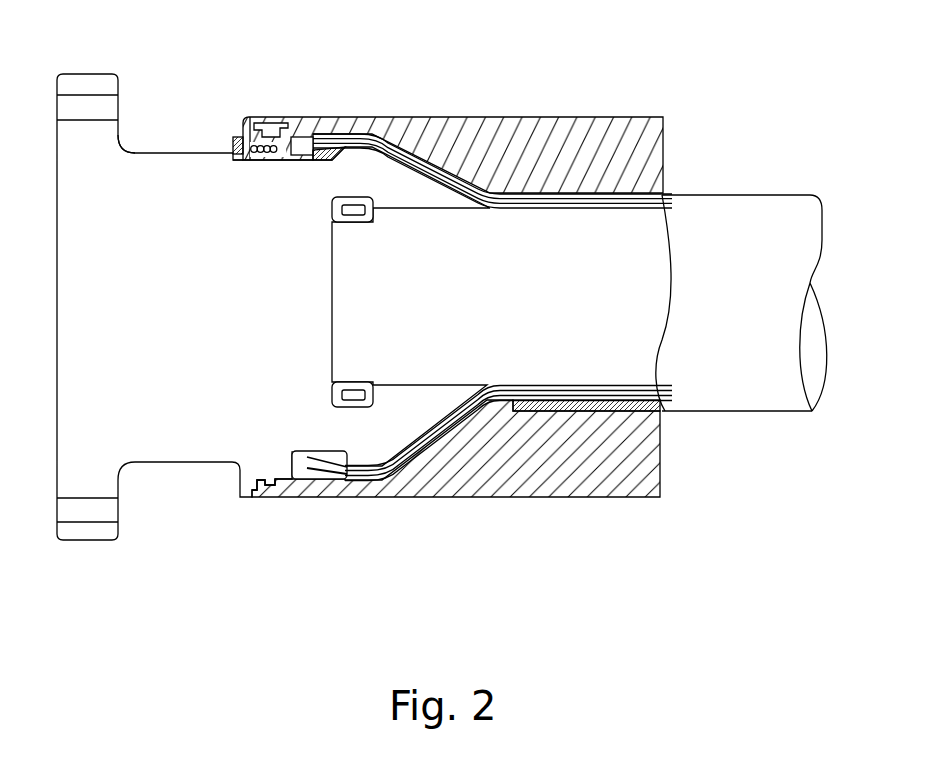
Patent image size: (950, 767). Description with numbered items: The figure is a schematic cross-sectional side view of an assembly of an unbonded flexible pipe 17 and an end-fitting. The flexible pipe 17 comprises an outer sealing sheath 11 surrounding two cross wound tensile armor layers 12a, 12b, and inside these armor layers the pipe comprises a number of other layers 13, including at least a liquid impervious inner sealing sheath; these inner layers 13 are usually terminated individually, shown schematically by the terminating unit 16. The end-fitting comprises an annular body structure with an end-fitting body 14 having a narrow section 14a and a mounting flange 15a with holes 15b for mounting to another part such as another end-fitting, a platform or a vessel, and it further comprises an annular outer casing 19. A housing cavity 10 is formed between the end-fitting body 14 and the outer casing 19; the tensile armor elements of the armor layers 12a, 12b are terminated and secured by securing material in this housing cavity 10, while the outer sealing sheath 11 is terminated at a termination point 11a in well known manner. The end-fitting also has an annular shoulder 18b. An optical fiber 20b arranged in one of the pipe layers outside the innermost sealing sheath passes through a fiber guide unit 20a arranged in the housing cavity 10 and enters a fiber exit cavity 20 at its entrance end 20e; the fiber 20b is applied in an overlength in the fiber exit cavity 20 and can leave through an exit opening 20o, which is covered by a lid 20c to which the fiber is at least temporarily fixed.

The housing cavity 10 is at (300, 464).
The outer sealing sheath 11 is at (800, 413).
The termination point 11a is at (515, 413).
The cross wound tensile armor layer 12a is at (368, 482).
The cross wound tensile armor layer 12b is at (338, 482).
The other layers 13 is at (530, 386).
The end-fitting body 14 is at (170, 388).
The narrow section 14a is at (165, 465).
The mounting flange 15a is at (118, 142).
The holes 15b is at (89, 106).
The terminating unit 16 is at (370, 383).
The flexible pipe 17 is at (748, 180).
The annular shoulder 18b is at (242, 497).
The outer casing 19 is at (428, 127).
The fiber exit cavity 20 is at (264, 133).
The fiber guide unit 20a is at (318, 135).
The optical fiber 20b is at (250, 117).
The lid 20c is at (233, 140).
The entrance end 20e is at (355, 147).
The exit opening 20o is at (246, 160).